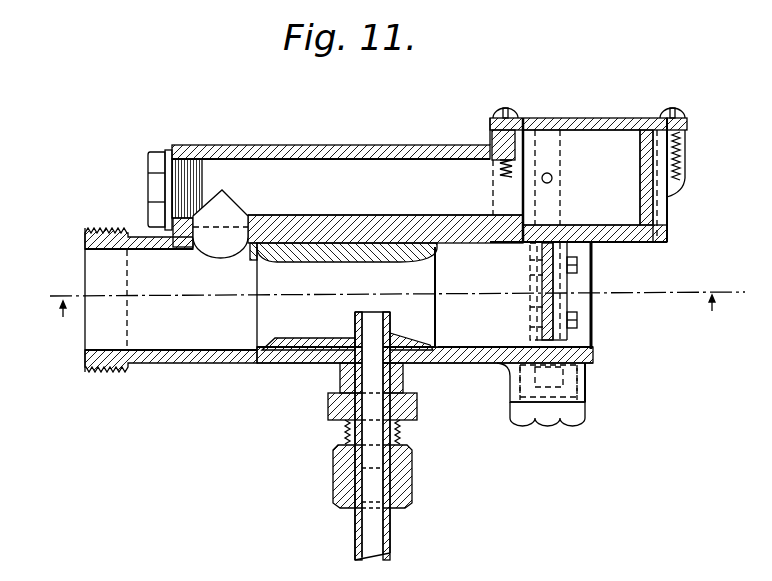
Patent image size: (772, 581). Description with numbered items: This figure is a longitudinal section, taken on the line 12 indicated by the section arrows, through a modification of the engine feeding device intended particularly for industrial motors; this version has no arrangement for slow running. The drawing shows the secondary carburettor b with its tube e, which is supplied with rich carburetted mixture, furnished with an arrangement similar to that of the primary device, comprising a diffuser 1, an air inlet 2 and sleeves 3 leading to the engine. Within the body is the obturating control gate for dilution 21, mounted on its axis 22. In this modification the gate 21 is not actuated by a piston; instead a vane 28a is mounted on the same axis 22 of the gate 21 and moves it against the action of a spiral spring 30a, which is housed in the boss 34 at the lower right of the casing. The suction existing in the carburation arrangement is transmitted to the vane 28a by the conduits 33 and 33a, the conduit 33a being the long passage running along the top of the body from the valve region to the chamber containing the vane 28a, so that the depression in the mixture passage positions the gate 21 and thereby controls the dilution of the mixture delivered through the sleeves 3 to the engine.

The diffuser 1 is at (302, 333).
The air inlet 2 is at (583, 262).
The sleeves 3 is at (171, 300).
The section line 12- 12 is at (387, 299).
The obturating gate for dilution 21 is at (563, 307).
The axis 22 is at (562, 148).
The vane 28a is at (602, 142).
The spiral spring 30a is at (577, 383).
The conduit 33 is at (218, 245).
The conduit 33a is at (355, 178).
The boss 34 is at (512, 382).
The secondary carburettor b is at (433, 363).
The tube e is at (372, 333).